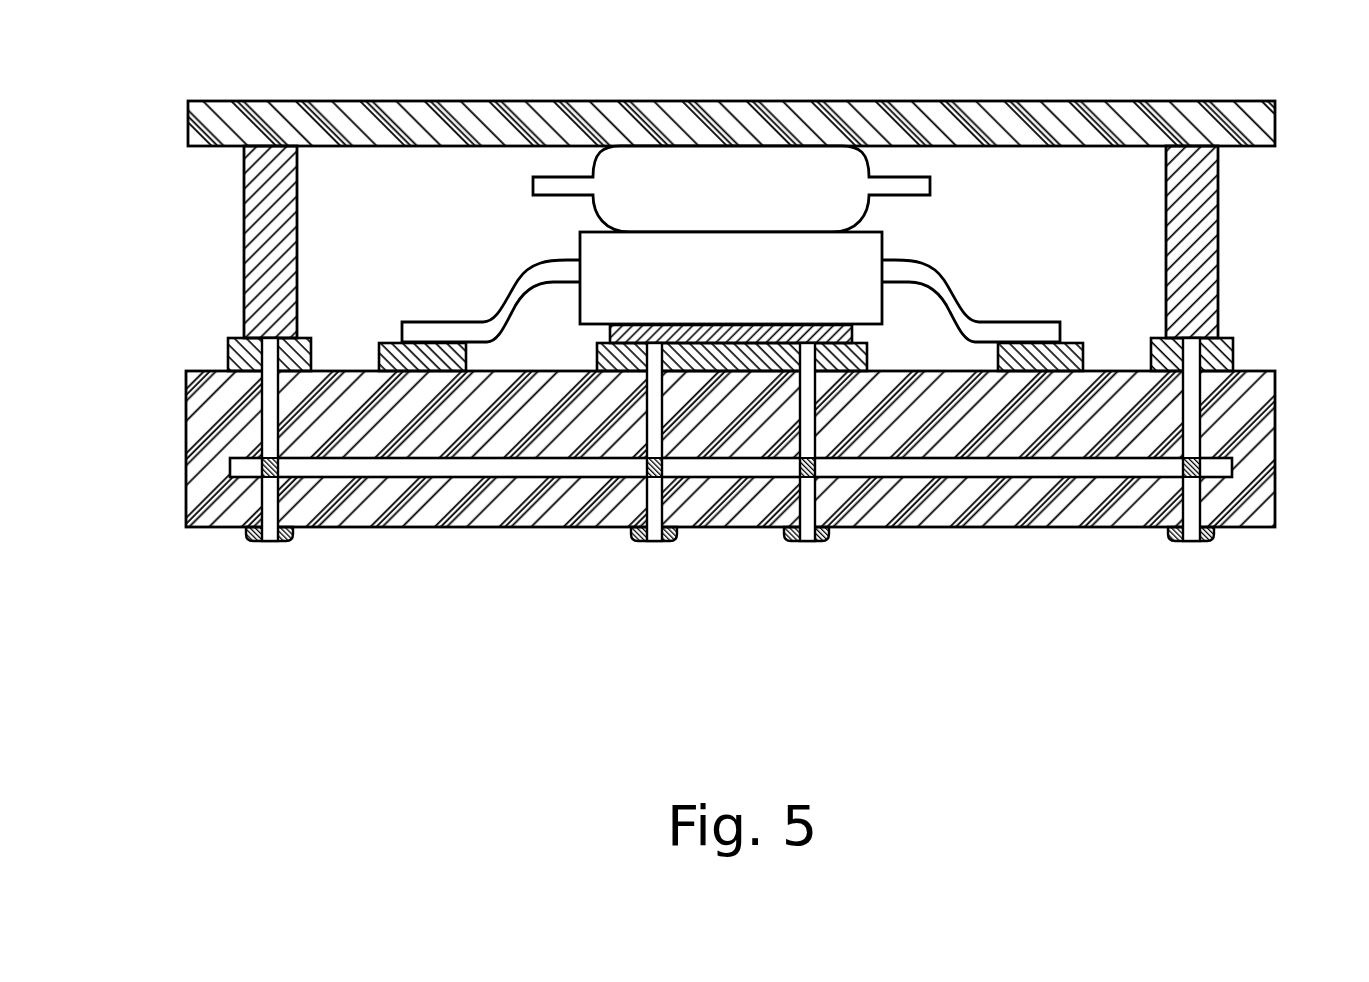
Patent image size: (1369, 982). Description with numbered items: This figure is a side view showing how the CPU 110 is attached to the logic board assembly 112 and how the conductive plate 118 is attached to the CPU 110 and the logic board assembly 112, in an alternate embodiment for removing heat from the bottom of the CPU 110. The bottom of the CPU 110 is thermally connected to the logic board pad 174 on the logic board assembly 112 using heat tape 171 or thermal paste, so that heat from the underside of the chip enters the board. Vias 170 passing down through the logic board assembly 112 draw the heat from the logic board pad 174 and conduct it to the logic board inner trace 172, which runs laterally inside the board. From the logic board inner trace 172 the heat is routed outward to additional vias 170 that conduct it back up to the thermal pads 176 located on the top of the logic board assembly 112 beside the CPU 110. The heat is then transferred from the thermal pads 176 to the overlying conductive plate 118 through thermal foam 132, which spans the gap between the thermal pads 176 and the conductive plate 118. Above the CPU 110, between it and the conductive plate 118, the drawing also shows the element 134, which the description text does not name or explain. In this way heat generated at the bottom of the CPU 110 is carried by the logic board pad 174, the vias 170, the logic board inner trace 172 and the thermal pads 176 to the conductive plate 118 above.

The CPU 110 is at (838, 268).
The logic board assembly 112 is at (1273, 373).
The conductive plate 118 is at (213, 123).
The thermal foam 132 is at (243, 232).
The elastomeric bladder / actuator 134 is at (616, 203).
The vias 170 is at (250, 541).
The heat tape 171 is at (600, 333).
The logic board inner trace 172 is at (1232, 466).
The logic board pad 174 is at (868, 350).
The thermal pads 176 is at (230, 340).